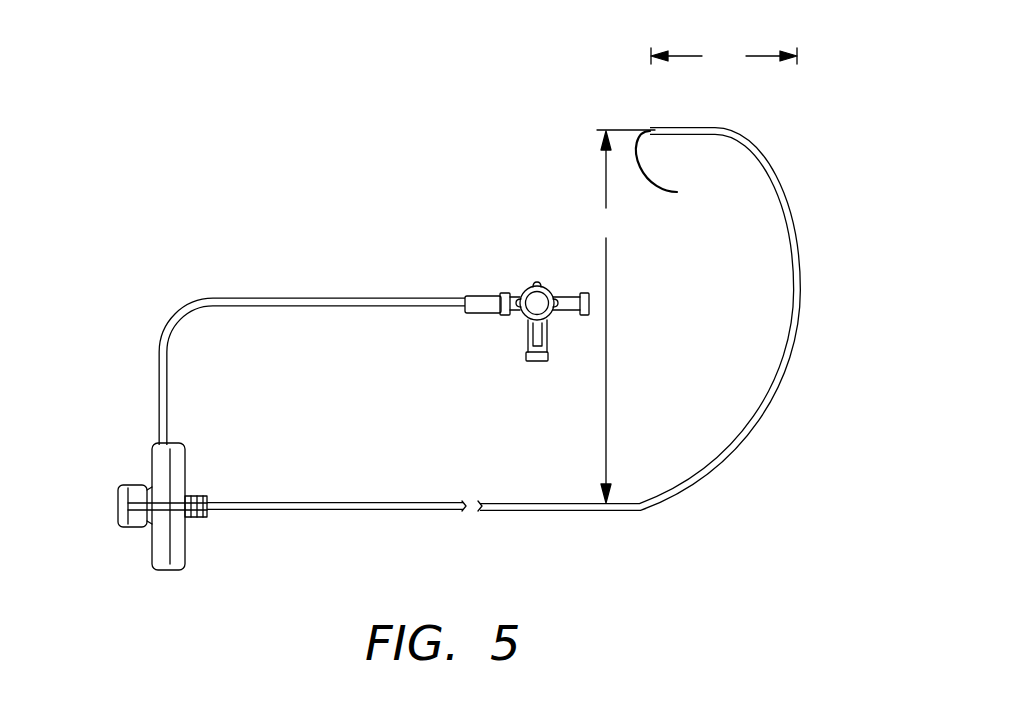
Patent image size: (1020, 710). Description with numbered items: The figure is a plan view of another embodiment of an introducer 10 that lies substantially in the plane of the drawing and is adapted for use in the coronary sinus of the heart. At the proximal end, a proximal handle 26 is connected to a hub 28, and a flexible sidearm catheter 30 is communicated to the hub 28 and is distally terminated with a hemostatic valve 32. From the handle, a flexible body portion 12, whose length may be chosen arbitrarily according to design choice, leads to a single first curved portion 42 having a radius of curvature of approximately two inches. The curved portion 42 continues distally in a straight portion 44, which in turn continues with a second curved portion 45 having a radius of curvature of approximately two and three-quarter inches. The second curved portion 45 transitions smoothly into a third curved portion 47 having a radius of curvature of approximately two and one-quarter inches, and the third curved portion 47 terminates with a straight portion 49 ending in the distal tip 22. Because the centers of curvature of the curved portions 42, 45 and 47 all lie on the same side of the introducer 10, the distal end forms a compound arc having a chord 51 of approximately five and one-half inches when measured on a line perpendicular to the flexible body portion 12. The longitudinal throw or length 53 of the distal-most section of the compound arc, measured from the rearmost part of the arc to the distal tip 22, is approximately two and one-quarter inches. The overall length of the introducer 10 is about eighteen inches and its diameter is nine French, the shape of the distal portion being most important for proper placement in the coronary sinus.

The introducer 10 is at (312, 240).
The flexible body portion 12 is at (590, 487).
The distal tip 22 is at (638, 319).
The proximal handle 26 is at (186, 462).
The hub 28 is at (136, 487).
The flexible sidearm catheter 30 is at (298, 307).
The hemostatic valve 32 is at (527, 289).
The first curved portion 42 is at (608, 535).
The straight portion 44 is at (790, 358).
The second curved portion 45 is at (801, 216).
The third curved portion 47 is at (731, 131).
The distal straight portion 49 is at (724, 126).
The chord 51 is at (622, 316).
The longitudinal throw 53 is at (724, 57).